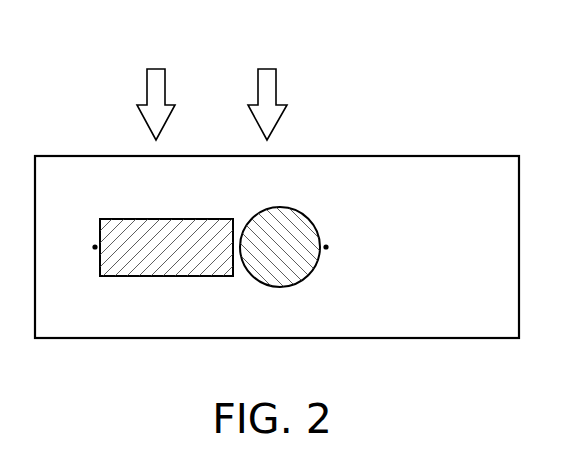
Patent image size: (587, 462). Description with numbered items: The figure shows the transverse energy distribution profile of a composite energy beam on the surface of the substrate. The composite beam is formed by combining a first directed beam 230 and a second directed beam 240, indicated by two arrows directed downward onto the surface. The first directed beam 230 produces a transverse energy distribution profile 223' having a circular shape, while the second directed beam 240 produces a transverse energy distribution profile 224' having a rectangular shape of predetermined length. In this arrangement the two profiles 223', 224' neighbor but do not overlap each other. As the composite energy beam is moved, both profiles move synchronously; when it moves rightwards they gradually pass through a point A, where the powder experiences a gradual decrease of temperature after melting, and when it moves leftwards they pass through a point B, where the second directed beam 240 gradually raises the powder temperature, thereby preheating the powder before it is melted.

The second directed beam 240 is at (158, 86).
The first directed beam 230 is at (268, 86).
The transverse energy distribution profile 224' is at (167, 297).
The transverse energy distribution profile 223' is at (280, 295).
The point A is at (326, 247).
The point B is at (95, 247).